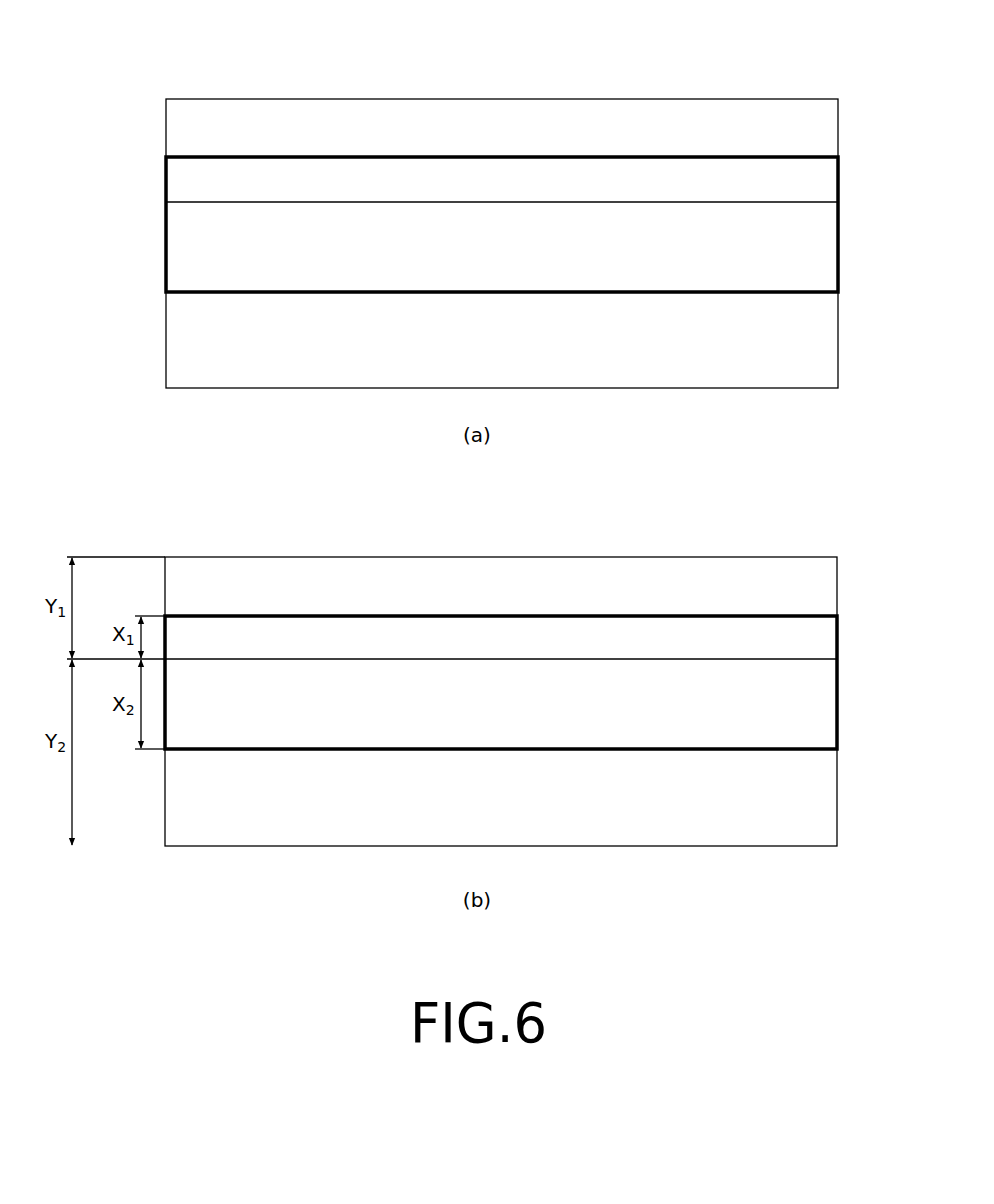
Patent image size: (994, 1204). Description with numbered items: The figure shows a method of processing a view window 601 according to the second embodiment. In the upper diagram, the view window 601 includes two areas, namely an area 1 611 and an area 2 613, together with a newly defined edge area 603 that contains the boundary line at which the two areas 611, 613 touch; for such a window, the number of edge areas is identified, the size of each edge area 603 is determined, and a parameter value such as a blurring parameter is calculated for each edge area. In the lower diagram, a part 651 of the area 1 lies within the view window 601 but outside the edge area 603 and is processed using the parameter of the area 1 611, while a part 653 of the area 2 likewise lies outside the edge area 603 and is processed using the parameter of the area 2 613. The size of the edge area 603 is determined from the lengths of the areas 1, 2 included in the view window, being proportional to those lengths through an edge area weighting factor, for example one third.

The view window 601 is at (305, 99).
The edge area 603 is at (166, 250).
The area 1 611 is at (846, 101).
The area 2 613 is at (846, 203).
The part of area 1 651 is at (846, 558).
The part of area 2 653 is at (846, 750).
The area 1 is at (501, 357).
The area 2 is at (501, 569).